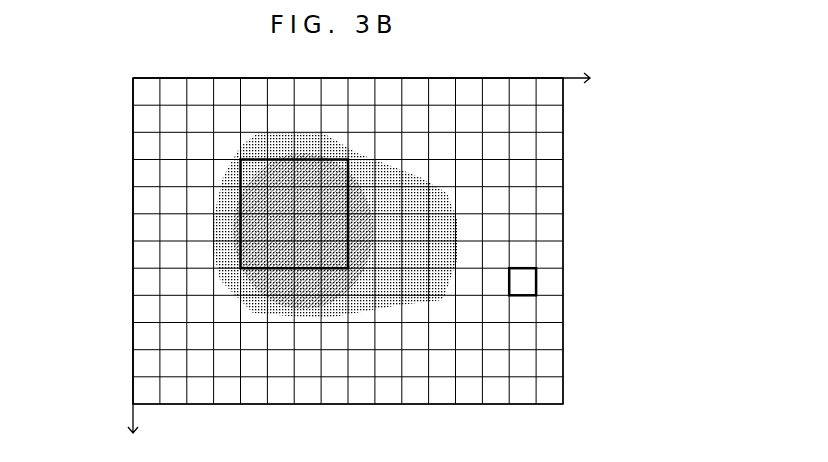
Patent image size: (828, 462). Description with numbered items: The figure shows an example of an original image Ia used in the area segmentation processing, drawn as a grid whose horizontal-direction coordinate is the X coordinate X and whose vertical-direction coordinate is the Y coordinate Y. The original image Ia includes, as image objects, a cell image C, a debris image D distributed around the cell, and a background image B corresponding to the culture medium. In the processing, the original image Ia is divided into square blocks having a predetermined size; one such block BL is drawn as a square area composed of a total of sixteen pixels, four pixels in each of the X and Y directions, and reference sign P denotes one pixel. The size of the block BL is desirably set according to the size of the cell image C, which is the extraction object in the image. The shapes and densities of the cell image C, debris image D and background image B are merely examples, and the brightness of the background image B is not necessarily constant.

The original image Ia is at (562, 143).
The X coordinate X is at (371, 80).
The Y coordinate Y is at (118, 259).
The debris image D is at (245, 318).
The cell image C is at (246, 236).
The block BL is at (240, 168).
The background image B is at (524, 226).
The pixel P is at (537, 283).